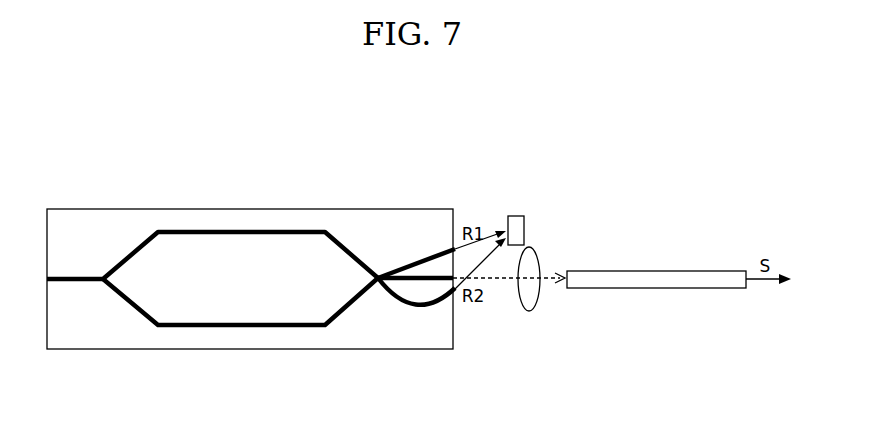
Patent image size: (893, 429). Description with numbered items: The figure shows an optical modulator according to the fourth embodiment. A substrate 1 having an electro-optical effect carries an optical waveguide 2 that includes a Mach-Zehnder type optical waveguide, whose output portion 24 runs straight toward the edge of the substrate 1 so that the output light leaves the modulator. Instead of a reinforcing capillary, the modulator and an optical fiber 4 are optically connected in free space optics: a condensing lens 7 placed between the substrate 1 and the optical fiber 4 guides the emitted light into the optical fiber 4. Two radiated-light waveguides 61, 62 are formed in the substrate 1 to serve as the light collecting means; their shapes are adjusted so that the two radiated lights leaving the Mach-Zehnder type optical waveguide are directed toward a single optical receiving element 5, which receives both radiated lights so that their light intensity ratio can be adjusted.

The substrate 1 is at (160, 222).
The optical waveguide 2 is at (247, 221).
The Mach-Zehnder type optical waveguide output portion 24 is at (435, 275).
The radiated-light waveguide 61 is at (413, 263).
The radiated-light waveguide 62 is at (410, 304).
The optical receiving element 5 is at (517, 217).
The condensing lens 7 is at (533, 298).
The optical fiber 4 is at (607, 278).